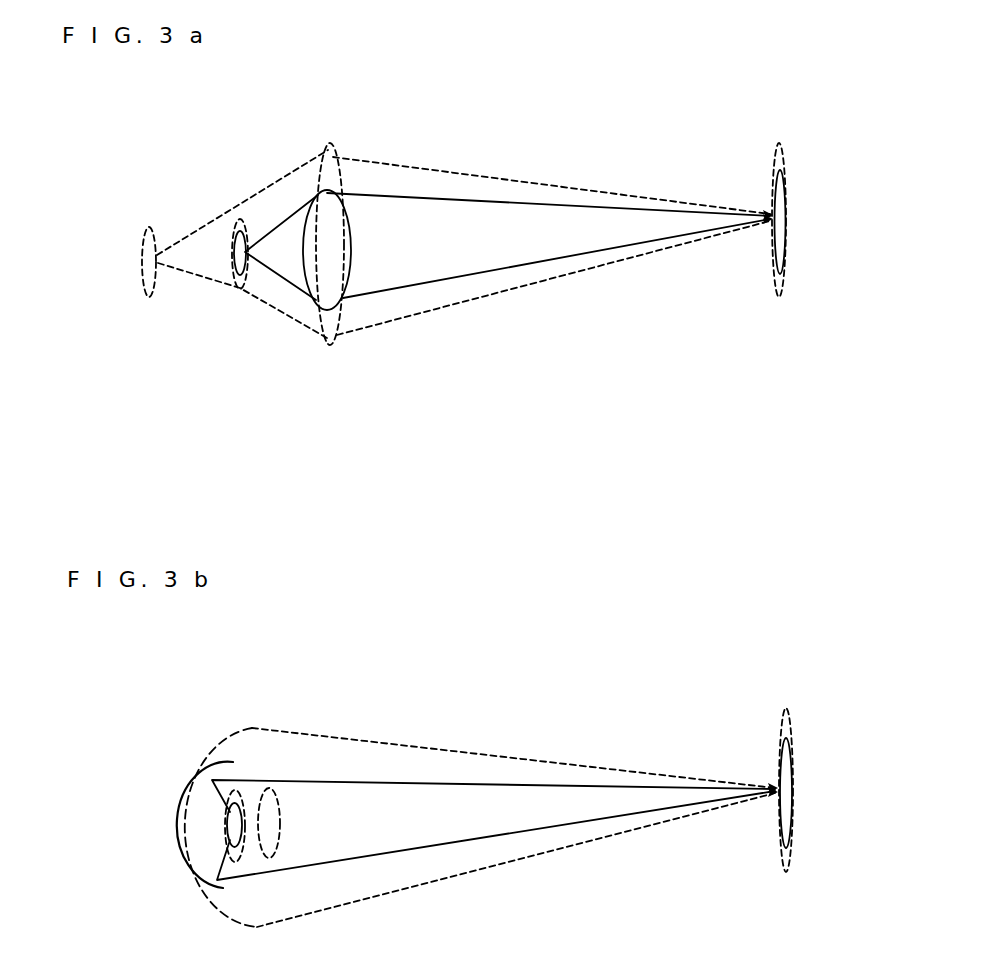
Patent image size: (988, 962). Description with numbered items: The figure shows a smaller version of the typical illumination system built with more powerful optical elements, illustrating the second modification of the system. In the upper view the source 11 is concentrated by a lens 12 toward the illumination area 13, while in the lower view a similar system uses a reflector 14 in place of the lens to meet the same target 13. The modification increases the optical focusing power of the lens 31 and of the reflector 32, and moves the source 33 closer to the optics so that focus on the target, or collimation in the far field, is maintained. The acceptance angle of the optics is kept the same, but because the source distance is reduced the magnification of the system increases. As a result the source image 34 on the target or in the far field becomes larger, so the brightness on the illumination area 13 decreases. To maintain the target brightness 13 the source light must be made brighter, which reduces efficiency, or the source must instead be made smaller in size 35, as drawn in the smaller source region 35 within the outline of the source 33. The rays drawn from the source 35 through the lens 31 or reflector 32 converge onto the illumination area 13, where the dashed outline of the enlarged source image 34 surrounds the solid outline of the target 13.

In FIG. 3a, the source 11 is at (142, 280).
In FIG. 3b, the source 11 is at (275, 805).
In FIG. 3a, the lens 12 is at (333, 152).
In FIG. 3a, the illumination area 13 is at (782, 232).
In FIG. 3b, the illumination area 13 is at (793, 818).
In FIG. 3b, the reflector 14 is at (197, 887).
In FIG. 3a, the lens 31 is at (350, 225).
In FIG. 3b, the reflector 32 is at (197, 783).
In FIG. 3a, the source 33 is at (238, 285).
In FIG. 3b, the source 33 is at (242, 863).
In FIG. 3a, the source image 34 is at (782, 152).
In FIG. 3b, the source image 34 is at (790, 725).
In FIG. 3a, the smaller size source 35 is at (233, 207).
In FIG. 3b, the smaller size source 35 is at (220, 747).